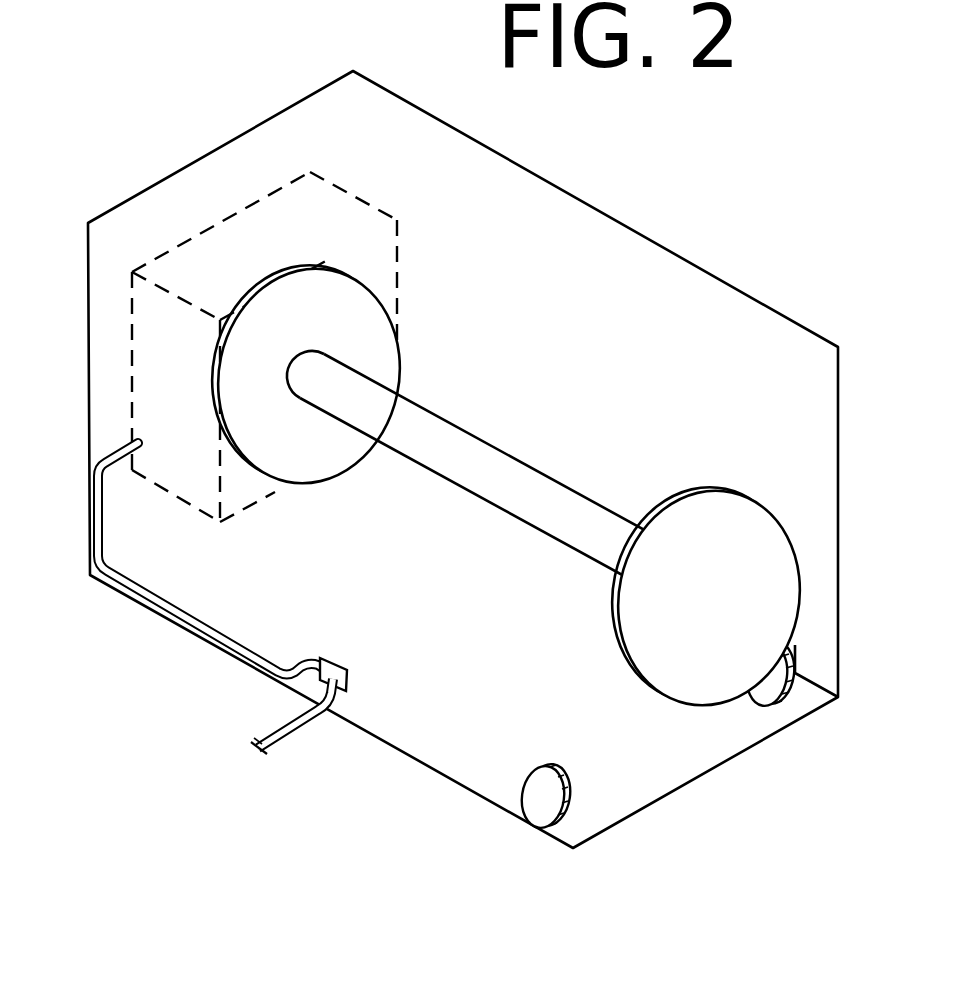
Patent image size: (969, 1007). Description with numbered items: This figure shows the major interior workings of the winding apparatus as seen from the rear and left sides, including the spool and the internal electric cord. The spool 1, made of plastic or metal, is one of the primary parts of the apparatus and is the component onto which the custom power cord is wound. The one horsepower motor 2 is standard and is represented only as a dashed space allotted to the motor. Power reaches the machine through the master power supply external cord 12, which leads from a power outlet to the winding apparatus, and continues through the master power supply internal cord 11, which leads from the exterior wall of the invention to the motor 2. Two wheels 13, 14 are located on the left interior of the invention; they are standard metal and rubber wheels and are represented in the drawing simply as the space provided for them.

The spool 1 is at (575, 512).
The motor 2 is at (155, 342).
The master power supply internal cord 11 is at (195, 625).
The master power supply external cord 12 is at (287, 732).
The wheel 13 is at (550, 795).
The wheel 14 is at (778, 692).